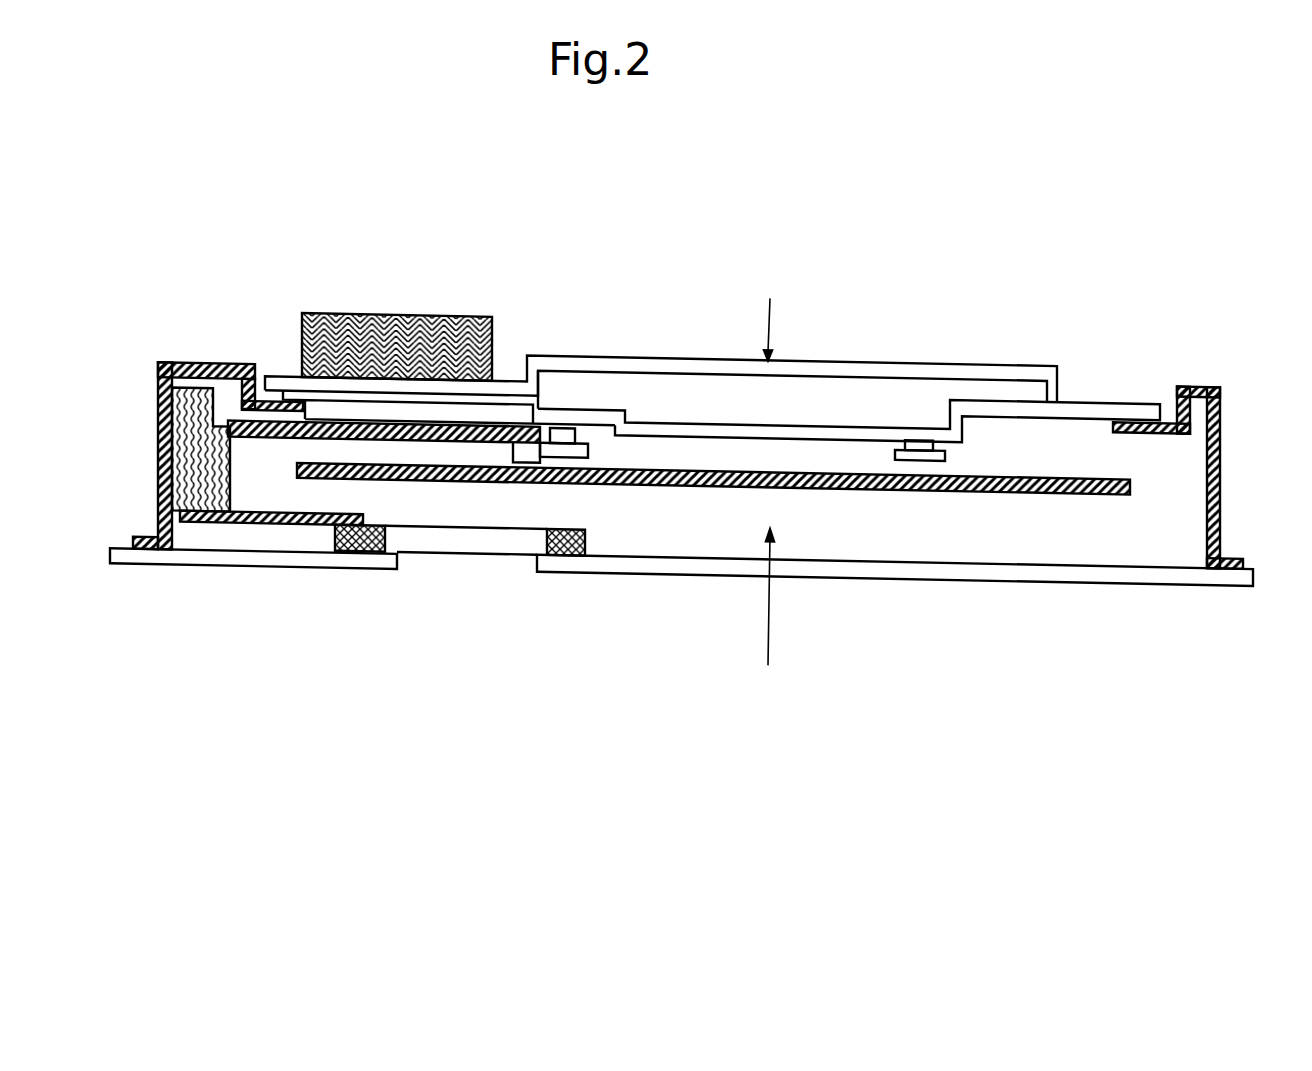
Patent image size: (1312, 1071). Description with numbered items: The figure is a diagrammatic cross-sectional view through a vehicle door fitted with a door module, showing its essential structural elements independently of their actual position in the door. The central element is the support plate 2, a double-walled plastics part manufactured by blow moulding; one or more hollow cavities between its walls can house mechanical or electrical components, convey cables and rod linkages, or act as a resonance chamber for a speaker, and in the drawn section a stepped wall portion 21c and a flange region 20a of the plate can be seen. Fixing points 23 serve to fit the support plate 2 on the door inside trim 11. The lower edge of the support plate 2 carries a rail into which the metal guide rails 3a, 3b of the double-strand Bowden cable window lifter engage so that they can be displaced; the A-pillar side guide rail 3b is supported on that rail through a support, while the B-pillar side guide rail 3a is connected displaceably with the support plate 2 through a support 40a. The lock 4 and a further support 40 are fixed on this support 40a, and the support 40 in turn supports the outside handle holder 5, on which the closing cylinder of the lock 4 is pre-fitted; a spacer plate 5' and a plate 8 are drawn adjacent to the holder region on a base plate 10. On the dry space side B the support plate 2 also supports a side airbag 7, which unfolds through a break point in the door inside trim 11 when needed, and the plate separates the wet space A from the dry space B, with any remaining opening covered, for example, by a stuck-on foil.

The support plate 2 is at (518, 387).
The flange plate of transducer frame 20a is at (283, 393).
The stepped bottom wall portion 21c is at (915, 400).
The fixing points 23 is at (1137, 399).
The side airbag 7 is at (397, 348).
The lock 4 is at (163, 436).
The door inside trim 11 is at (162, 491).
The base plate 10 is at (143, 568).
The support 40 is at (240, 529).
The support 40a is at (487, 431).
The outside handle holder 5 is at (453, 579).
The spacer plate 5' is at (466, 579).
The guide rail 3a is at (585, 449).
The guide rail 3b is at (888, 452).
The circuit board 8 is at (692, 480).
The wet space A is at (768, 620).
The dry space B is at (770, 308).